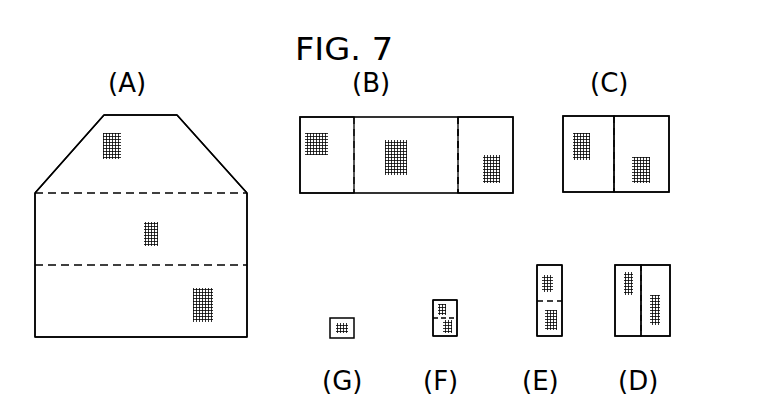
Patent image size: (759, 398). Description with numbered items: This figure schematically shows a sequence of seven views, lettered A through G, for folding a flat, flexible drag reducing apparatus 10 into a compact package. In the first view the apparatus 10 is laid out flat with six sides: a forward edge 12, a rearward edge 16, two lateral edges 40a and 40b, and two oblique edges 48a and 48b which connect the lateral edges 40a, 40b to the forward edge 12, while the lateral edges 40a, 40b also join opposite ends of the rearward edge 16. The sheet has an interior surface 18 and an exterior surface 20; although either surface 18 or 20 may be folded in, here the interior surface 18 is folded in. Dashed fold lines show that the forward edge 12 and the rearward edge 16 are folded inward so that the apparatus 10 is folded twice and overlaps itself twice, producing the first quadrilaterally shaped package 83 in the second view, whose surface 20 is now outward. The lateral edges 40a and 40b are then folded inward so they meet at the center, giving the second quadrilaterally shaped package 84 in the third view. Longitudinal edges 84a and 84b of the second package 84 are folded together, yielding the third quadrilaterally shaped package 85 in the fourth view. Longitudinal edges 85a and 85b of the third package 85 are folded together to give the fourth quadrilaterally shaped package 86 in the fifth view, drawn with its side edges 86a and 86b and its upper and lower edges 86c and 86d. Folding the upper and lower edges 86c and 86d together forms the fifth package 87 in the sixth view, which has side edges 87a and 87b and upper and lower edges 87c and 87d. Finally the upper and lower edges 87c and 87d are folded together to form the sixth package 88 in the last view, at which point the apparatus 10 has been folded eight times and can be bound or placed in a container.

The drag reducing apparatus 10 is at (193, 118).
The forward edge 12 is at (160, 112).
The rearward edge 16 is at (125, 341).
The interior surface 18 is at (210, 231).
The exterior surface 20 is at (468, 175).
The lateral edge 40a is at (27, 210).
The lateral edge 40b is at (250, 314).
The oblique edge 48a is at (88, 132).
The oblique edge 48b is at (198, 135).
The first quadrilaterally shaped package 83 is at (395, 125).
The second quadrilaterally shaped package 84 is at (643, 123).
The longitudinal edge 84a is at (560, 158).
The longitudinal edge 84b is at (672, 148).
The third quadrilaterally shaped package 85 is at (655, 272).
The longitudinal edge 85a is at (613, 295).
The longitudinal edge 85b is at (672, 305).
The fourth quadrilaterally shaped package 86 is at (538, 275).
The edge of fourth package 86a is at (537, 308).
The edge of fourth package 86b is at (563, 281).
The upper edge 86c is at (553, 265).
The lower edge 86d is at (557, 336).
The fifth package 87 is at (433, 303).
The edge of fifth package 87a is at (433, 313).
The edge of fifth package 87b is at (459, 304).
The upper edge 87c is at (445, 298).
The lower edge 87d is at (446, 338).
The sixth package 88 is at (330, 322).